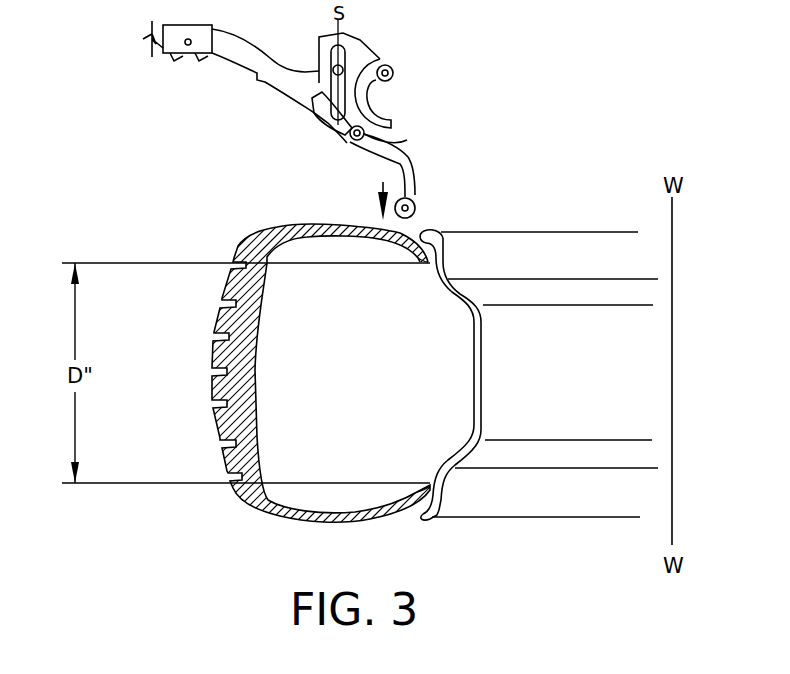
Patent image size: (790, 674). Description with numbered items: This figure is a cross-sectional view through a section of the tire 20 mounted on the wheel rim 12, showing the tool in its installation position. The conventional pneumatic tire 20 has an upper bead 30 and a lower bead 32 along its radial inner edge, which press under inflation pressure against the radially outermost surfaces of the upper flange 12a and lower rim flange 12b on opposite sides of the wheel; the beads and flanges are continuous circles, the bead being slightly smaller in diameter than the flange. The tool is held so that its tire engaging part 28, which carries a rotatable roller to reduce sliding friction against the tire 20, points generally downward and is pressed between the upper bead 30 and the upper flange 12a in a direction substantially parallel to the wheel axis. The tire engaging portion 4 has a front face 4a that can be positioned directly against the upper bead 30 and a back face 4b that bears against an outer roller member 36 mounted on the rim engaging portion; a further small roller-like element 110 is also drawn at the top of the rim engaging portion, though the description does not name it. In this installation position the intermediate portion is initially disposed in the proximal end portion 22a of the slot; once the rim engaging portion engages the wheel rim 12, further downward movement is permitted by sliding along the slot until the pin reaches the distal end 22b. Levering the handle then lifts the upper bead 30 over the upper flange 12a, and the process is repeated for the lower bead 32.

The tire engaging portion 4 is at (306, 135).
The front face 4a is at (357, 157).
The back face 4b is at (407, 140).
The wheel rim 12 is at (550, 257).
The upper flange 12a is at (452, 232).
The lower rim flange 12b is at (431, 517).
The vehicle tire 20 is at (187, 380).
The proximal end portion of slot 22a is at (333, 50).
The distal end of slot 22b is at (333, 112).
The tire engaging part 28 is at (422, 175).
The upper bead 30 is at (427, 263).
The lower bead 32 is at (428, 486).
The outer roller member 36 is at (340, 135).
The roller 110 is at (393, 73).